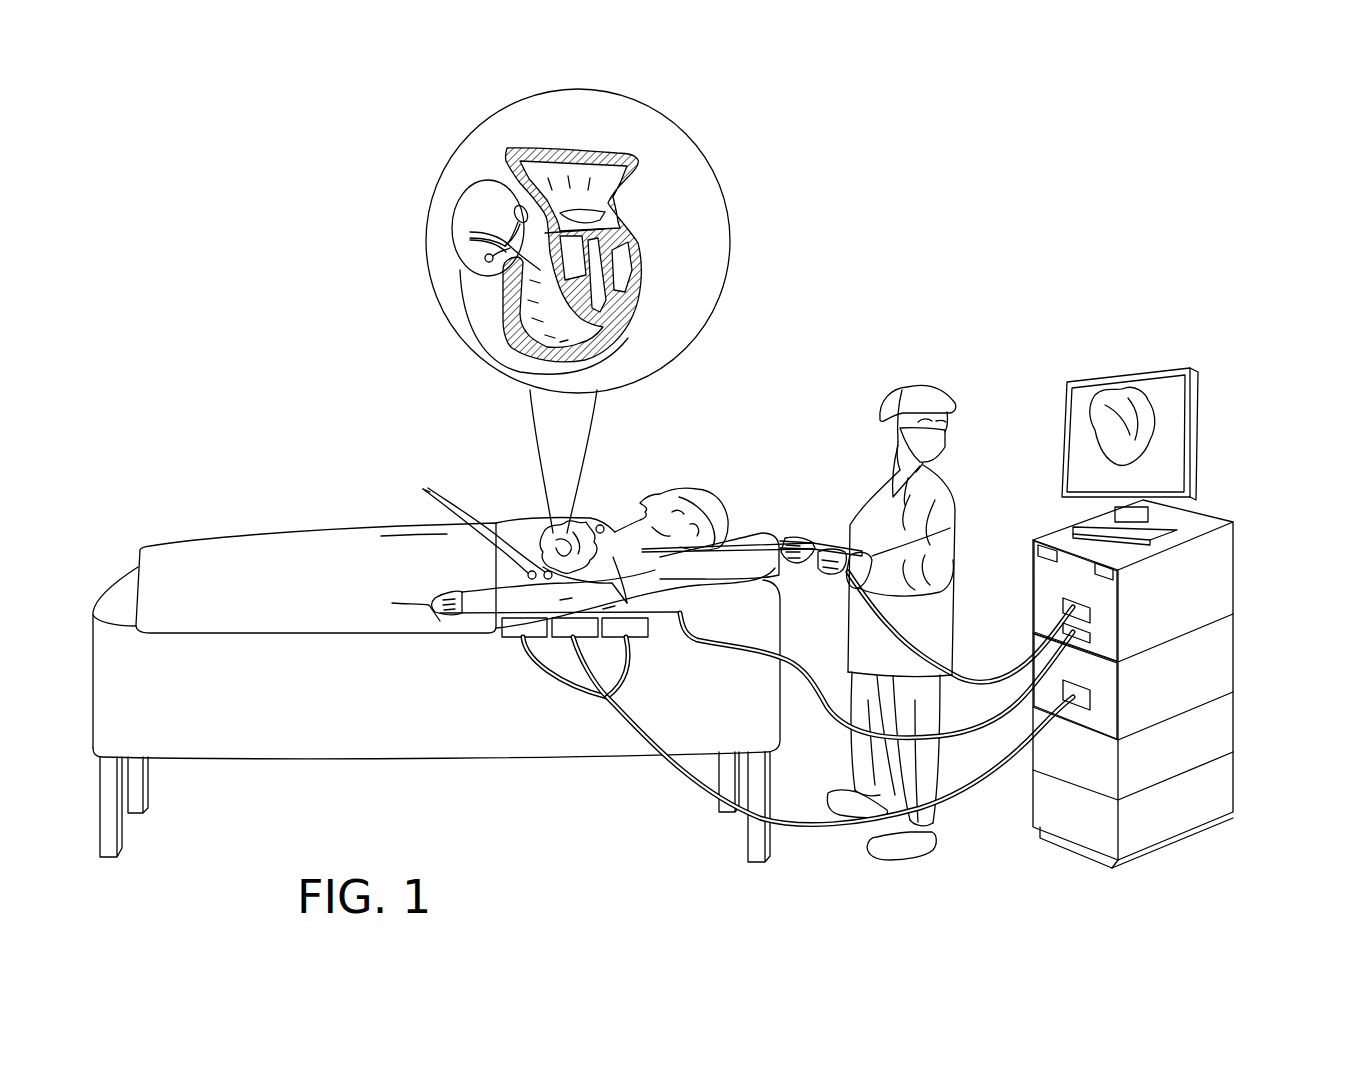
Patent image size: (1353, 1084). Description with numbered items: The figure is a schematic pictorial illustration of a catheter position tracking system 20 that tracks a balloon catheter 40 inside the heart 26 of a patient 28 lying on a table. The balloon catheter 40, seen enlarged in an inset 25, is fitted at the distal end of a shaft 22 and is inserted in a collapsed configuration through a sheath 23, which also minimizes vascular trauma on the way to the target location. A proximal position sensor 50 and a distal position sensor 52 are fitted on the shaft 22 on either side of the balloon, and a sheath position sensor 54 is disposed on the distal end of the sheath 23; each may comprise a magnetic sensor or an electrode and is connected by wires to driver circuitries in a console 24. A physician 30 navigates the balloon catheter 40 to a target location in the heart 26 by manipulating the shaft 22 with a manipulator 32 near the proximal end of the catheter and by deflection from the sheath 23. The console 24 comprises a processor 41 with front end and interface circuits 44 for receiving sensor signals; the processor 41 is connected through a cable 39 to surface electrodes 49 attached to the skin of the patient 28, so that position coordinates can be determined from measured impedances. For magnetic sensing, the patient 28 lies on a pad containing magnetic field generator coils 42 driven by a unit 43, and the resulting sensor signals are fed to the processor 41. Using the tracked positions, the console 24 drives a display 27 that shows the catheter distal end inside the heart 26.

The catheter position tracking system 20 is at (1086, 235).
The shaft 22 is at (500, 240).
The sheath 23 is at (480, 262).
The console 24 is at (1264, 367).
The inset 25 is at (426, 226).
The heart 26 is at (643, 268).
The display 27 is at (1200, 402).
The patient 28 is at (705, 487).
The physician 30 is at (942, 383).
The manipulator 32 is at (833, 540).
The cable 39 is at (829, 703).
The balloon catheter 40 is at (516, 210).
The processor 41 is at (1233, 718).
The magnetic field generator coils 42 is at (520, 640).
The unit 43 is at (1233, 648).
The front end and interface circuits 44 is at (1032, 578).
The surface electrodes 49 is at (600, 526).
The proximal position sensor 50 is at (512, 232).
The distal position sensor 52 is at (522, 207).
The sheath position sensor 54 is at (485, 256).